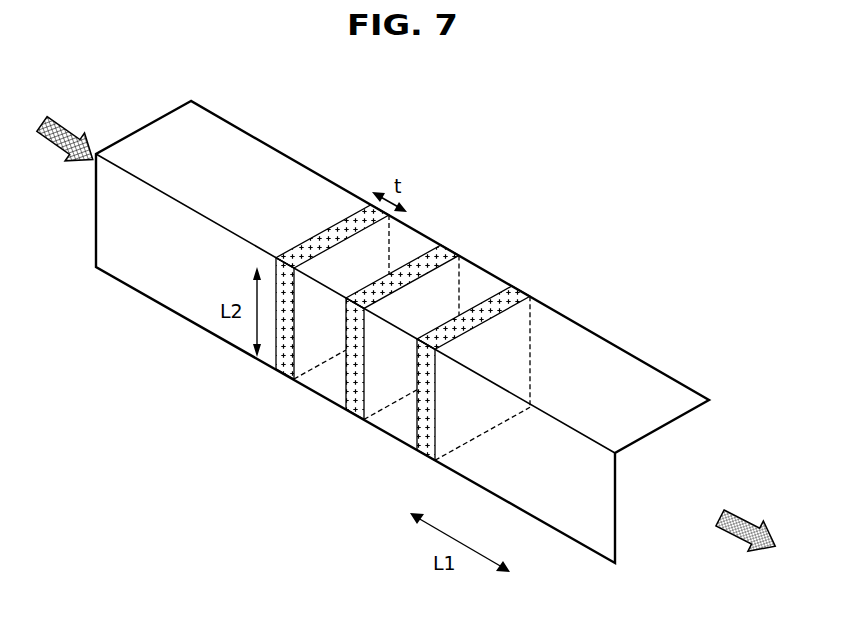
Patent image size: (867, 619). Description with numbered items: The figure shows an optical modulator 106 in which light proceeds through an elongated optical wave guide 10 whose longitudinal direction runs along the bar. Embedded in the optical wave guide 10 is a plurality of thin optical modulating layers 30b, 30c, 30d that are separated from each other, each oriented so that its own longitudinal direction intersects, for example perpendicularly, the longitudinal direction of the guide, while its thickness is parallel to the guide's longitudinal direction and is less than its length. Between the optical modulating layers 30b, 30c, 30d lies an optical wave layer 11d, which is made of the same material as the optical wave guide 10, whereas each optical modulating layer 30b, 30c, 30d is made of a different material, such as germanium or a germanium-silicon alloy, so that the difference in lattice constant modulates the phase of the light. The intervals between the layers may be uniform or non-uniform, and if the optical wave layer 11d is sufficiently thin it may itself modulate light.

The optical wave guide 10 is at (208, 308).
The optical wave layer 11d is at (410, 245).
The optical modulating layer 30b is at (333, 227).
The optical modulating layer 30c is at (444, 250).
The optical modulating layer 30d is at (508, 298).
The optical modulator 106 is at (402, 332).